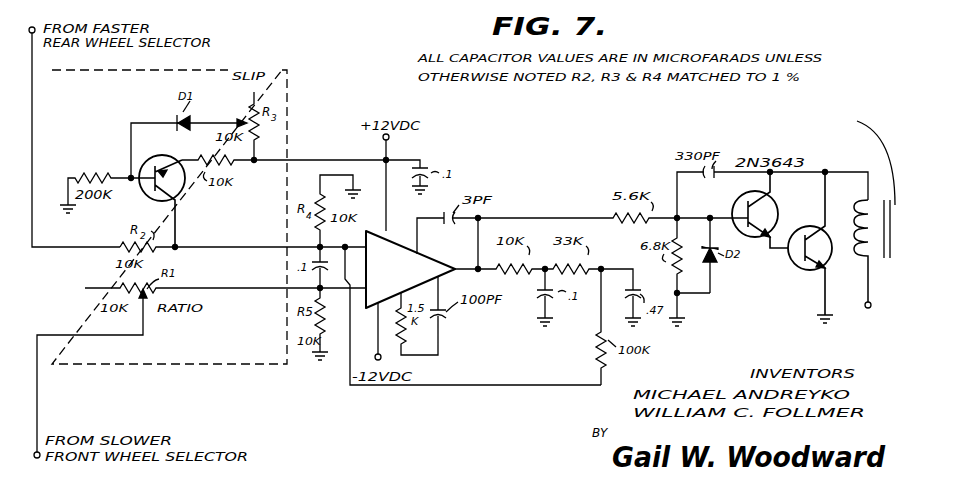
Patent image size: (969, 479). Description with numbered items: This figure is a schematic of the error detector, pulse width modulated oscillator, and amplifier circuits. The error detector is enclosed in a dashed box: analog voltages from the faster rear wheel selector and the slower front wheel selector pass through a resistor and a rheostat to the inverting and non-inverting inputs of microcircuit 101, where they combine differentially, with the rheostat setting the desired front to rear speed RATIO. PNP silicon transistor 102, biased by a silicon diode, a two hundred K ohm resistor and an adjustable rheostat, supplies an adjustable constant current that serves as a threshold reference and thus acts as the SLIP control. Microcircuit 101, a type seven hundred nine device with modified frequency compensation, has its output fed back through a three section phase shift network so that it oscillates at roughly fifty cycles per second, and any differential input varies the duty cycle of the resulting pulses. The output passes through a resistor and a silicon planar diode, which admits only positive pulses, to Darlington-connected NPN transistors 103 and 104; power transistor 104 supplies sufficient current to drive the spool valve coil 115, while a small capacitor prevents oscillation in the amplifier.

The microcircuit 101 is at (401, 241).
The PNP silicon transistor 102 is at (150, 160).
The NPN transistor 103 is at (775, 206).
The NPN transistor 104 is at (822, 238).
The spool valve coil 115 is at (858, 250).